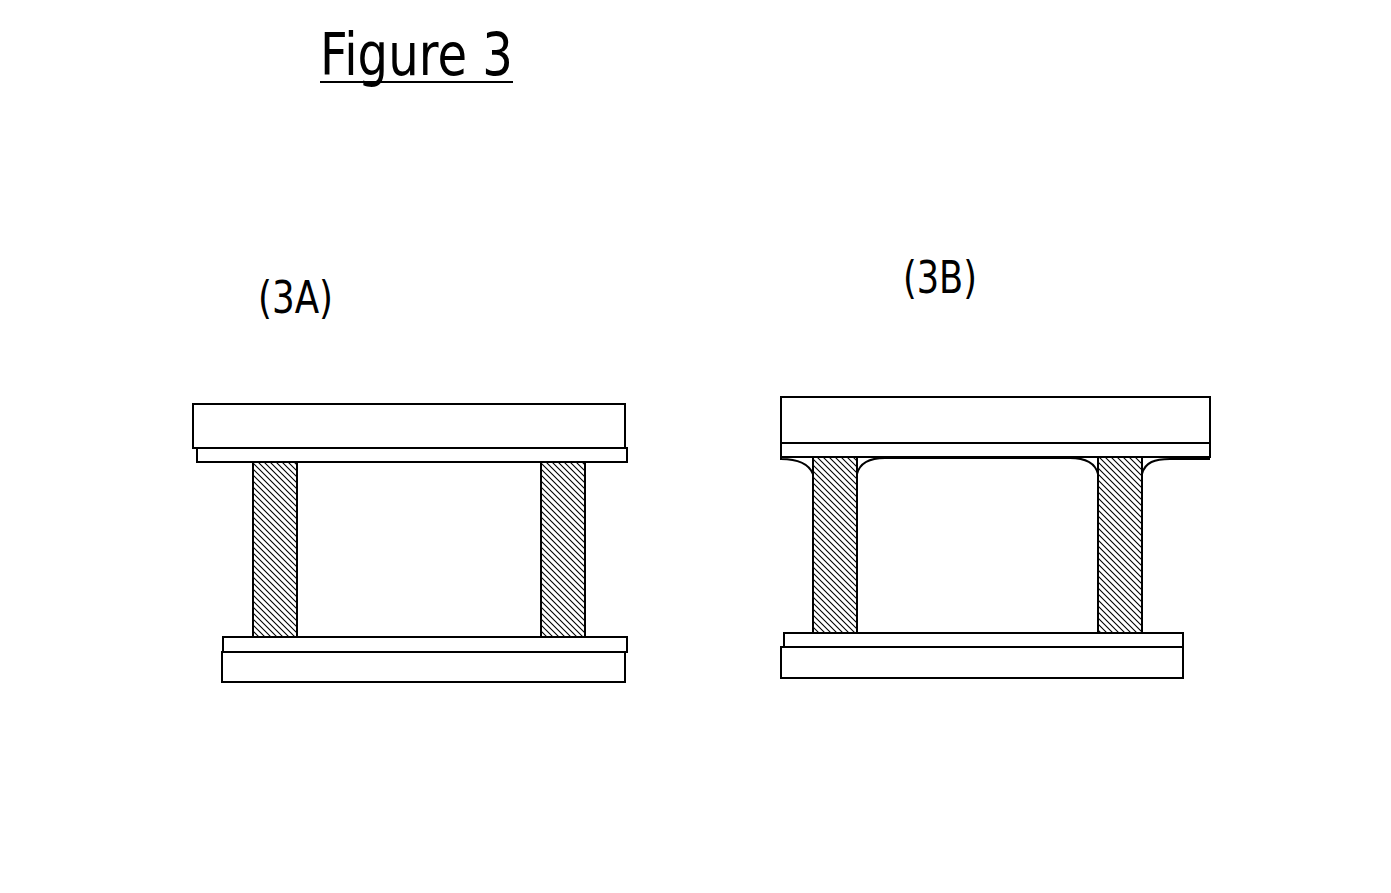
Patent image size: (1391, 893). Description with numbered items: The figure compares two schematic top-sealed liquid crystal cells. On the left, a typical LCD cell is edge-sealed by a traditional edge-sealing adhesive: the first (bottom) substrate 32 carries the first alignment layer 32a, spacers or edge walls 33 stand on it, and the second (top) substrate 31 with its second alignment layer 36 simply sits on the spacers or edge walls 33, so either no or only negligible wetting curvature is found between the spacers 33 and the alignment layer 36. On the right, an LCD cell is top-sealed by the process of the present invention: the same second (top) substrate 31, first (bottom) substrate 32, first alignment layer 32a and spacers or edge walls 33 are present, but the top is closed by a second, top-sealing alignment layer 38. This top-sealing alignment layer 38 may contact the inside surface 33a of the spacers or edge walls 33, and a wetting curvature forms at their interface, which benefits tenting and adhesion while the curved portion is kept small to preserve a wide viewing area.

In FIG. 3A, the second (top) substrate 31 is at (582, 402).
In FIG. 3B, the second (top) substrate 31 is at (808, 400).
In FIG. 3A, the second alignment layer 36 is at (193, 465).
In FIG. 3B, the second alignment layer 36 is at (995, 450).
In FIG. 3A, the spacers or edge walls 33 is at (235, 538).
In FIG. 3B, the spacers or edge walls 33 is at (1153, 543).
In FIG. 3B, the inside surface of the spacers or edge walls 33a is at (1097, 503).
In FIG. 3B, the second and top-sealing alignment layer 38 is at (953, 459).
In FIG. 3A, the first alignment layer 32a is at (220, 640).
In FIG. 3B, the first alignment layer 32a is at (1185, 633).
In FIG. 3A, the first (bottom) substrate 32 is at (583, 695).
In FIG. 3B, the first (bottom) substrate 32 is at (812, 693).